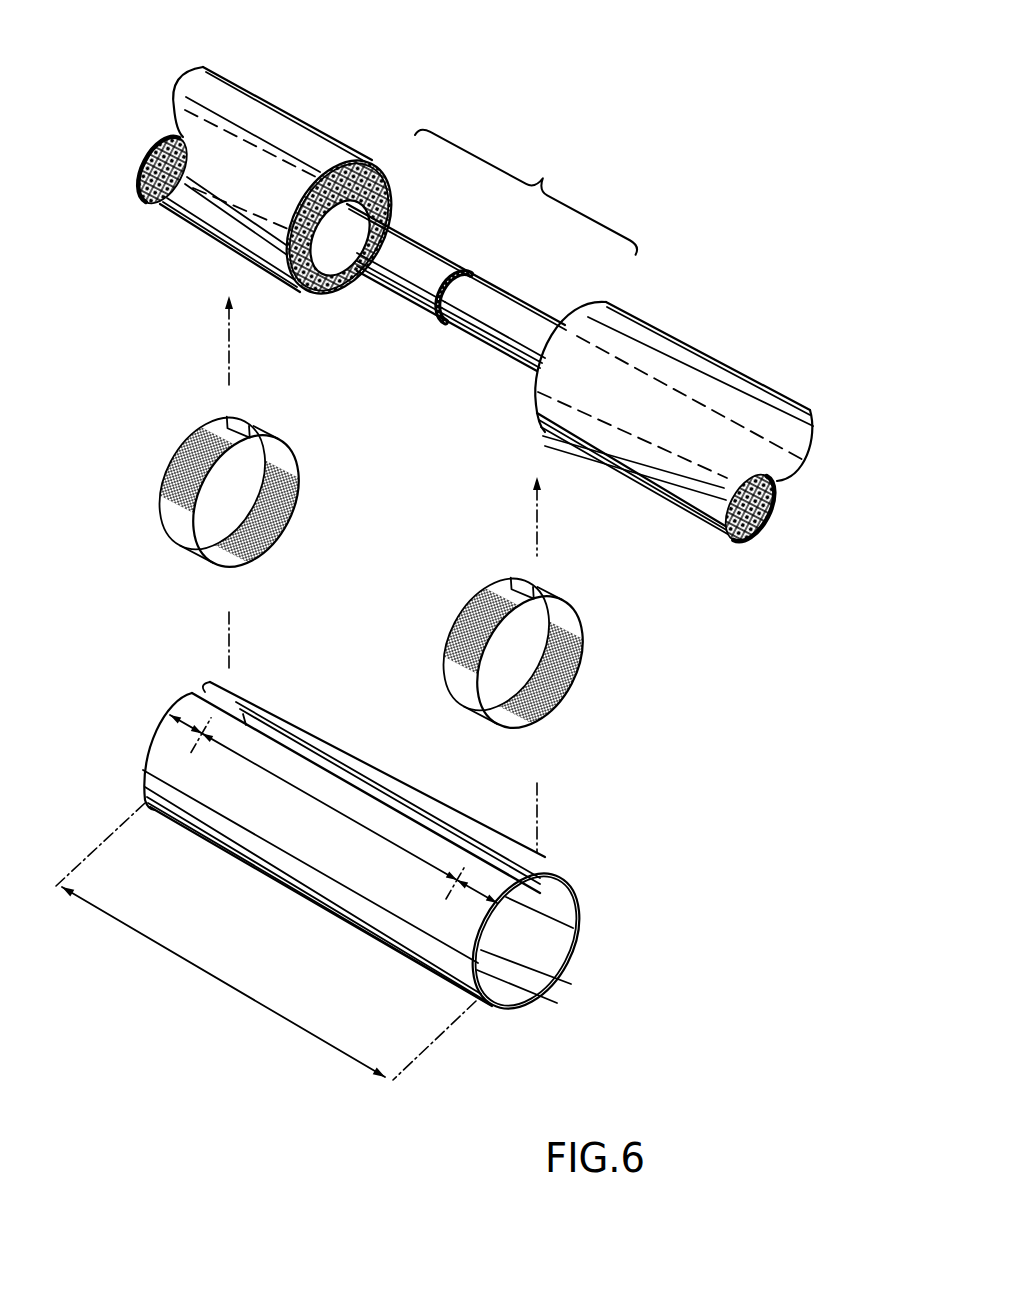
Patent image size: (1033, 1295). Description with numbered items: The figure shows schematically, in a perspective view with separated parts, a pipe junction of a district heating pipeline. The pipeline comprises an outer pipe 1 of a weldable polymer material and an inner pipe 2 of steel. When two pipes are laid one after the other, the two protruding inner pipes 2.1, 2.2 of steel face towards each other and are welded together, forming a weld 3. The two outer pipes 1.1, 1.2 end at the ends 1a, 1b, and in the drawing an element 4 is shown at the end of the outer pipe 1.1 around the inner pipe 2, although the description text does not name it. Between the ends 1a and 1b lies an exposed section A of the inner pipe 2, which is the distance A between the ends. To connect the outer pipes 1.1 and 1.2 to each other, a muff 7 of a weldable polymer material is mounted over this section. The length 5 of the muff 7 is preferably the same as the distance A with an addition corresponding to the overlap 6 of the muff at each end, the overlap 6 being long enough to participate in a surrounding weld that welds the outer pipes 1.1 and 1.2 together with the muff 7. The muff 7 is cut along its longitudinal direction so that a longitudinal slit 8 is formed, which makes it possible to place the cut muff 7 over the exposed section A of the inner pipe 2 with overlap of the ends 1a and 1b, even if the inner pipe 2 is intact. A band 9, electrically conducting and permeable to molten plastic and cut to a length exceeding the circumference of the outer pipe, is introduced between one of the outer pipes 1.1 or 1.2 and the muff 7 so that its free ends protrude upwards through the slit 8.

The outer pipe 1 is at (470, 276).
The outer pipe 1.1 is at (237, 185).
The outer pipe 1.2 is at (697, 450).
The end of outer pipe 1a is at (377, 163).
The end of outer pipe 1b is at (613, 307).
The inner pipe 2 is at (456, 283).
The inner pipe 2.1 is at (397, 262).
The inner pipe 2.2 is at (503, 325).
The weld 3 is at (442, 323).
The plug 4 is at (358, 187).
The length of the muff 5 is at (266, 941).
The overlap of the muff 6 is at (333, 801).
The muff 7 is at (372, 851).
The longitudinal slit 8 is at (333, 770).
The band 9 is at (183, 509).
The distance between the ends of the outer pipes A is at (424, 497).